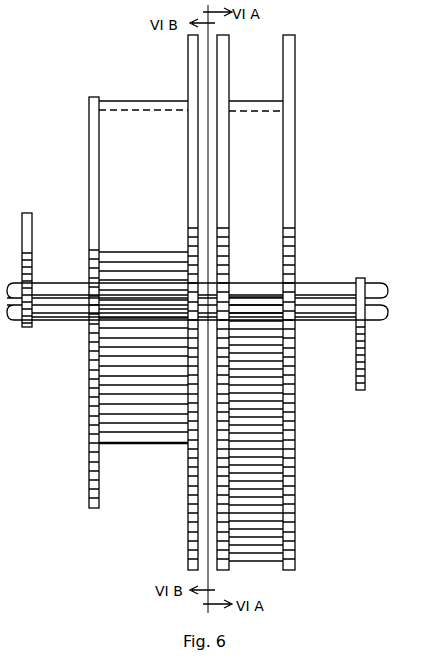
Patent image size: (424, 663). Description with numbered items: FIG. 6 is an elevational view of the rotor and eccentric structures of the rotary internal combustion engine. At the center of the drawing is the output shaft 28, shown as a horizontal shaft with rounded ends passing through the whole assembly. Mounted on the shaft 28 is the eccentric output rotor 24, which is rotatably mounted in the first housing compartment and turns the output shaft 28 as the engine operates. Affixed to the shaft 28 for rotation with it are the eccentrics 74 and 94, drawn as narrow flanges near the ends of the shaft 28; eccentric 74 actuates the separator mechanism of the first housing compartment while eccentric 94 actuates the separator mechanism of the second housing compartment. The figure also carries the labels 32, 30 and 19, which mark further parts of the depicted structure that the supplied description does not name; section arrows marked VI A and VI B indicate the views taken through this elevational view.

The eccentric 94 is at (33, 228).
The eccentric 74 is at (367, 356).
The spool flange 32 is at (283, 70).
The spool core 30 is at (256, 83).
The eccentric output rotor 24 is at (268, 140).
The output shaft 28 is at (318, 282).
The spool assembly 19 is at (316, 309).